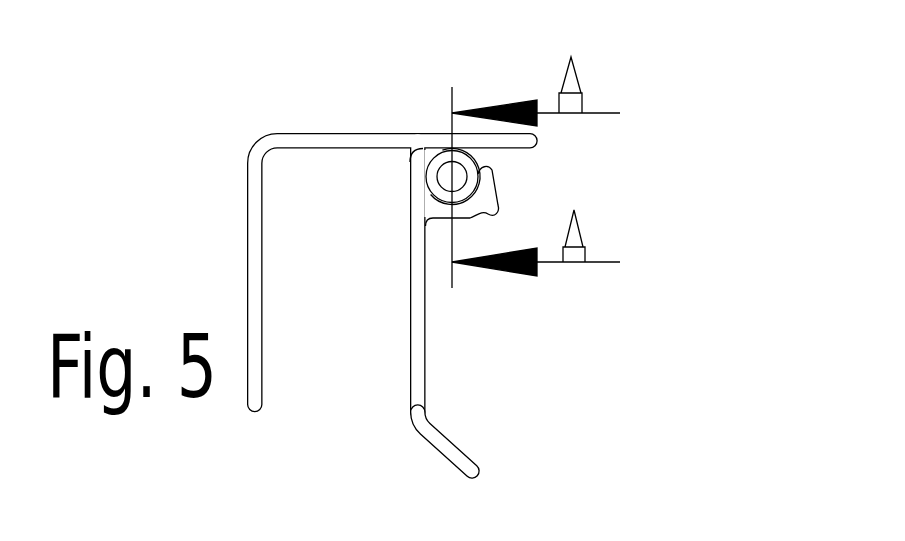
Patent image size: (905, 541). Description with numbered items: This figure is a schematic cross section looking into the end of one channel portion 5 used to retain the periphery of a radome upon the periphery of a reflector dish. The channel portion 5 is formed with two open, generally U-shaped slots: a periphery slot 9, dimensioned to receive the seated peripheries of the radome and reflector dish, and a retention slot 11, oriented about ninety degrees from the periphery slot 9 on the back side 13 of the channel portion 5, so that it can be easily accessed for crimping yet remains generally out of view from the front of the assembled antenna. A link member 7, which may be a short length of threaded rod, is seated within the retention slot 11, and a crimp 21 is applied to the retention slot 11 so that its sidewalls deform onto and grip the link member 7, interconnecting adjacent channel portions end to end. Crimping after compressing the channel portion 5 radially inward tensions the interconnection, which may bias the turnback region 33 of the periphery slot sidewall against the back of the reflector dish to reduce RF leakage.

The channel portion 5 is at (292, 134).
The link member 7 is at (442, 176).
The periphery slot 9 is at (343, 342).
The retention slot 11 is at (495, 160).
The back side 13 is at (642, 295).
The crimp 21 is at (473, 196).
The turnback region 33 is at (463, 465).